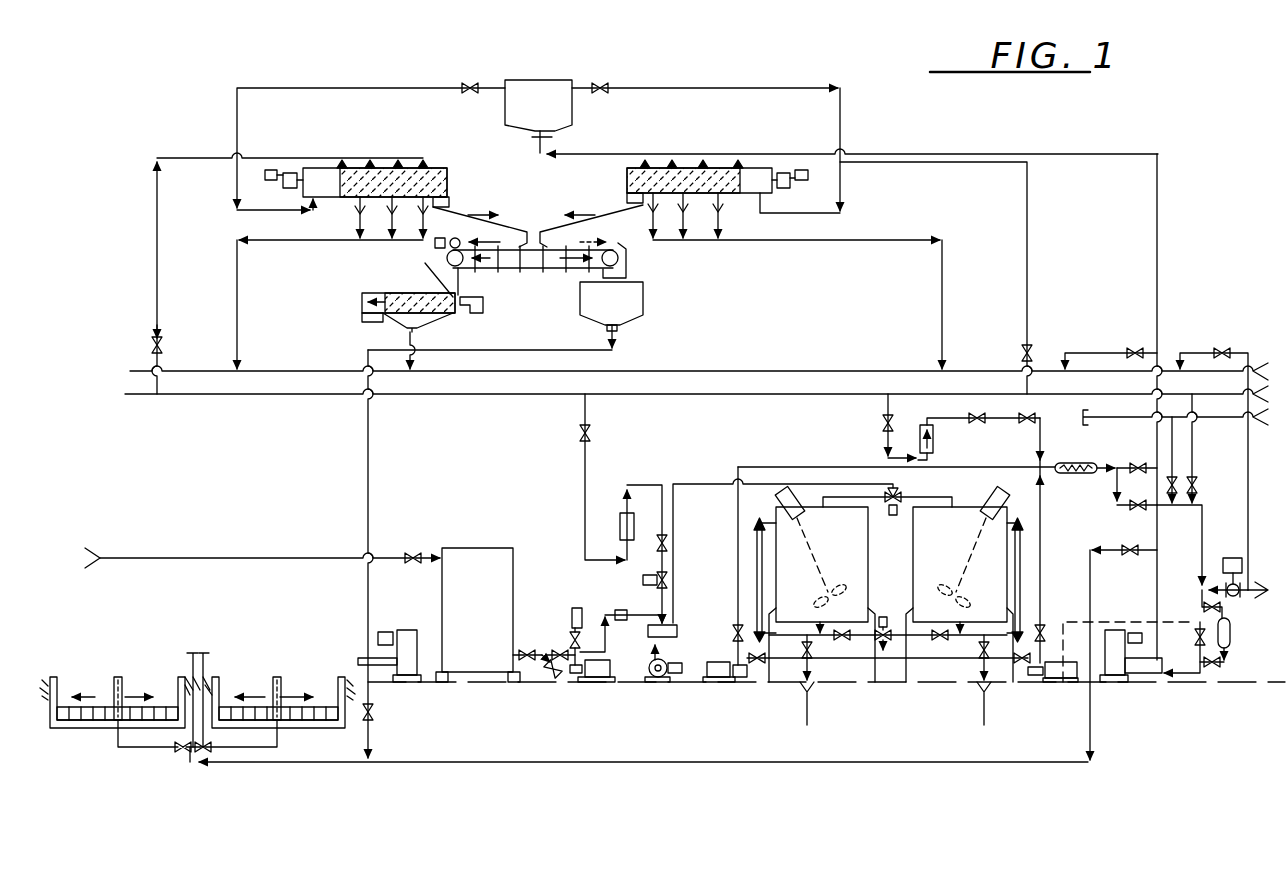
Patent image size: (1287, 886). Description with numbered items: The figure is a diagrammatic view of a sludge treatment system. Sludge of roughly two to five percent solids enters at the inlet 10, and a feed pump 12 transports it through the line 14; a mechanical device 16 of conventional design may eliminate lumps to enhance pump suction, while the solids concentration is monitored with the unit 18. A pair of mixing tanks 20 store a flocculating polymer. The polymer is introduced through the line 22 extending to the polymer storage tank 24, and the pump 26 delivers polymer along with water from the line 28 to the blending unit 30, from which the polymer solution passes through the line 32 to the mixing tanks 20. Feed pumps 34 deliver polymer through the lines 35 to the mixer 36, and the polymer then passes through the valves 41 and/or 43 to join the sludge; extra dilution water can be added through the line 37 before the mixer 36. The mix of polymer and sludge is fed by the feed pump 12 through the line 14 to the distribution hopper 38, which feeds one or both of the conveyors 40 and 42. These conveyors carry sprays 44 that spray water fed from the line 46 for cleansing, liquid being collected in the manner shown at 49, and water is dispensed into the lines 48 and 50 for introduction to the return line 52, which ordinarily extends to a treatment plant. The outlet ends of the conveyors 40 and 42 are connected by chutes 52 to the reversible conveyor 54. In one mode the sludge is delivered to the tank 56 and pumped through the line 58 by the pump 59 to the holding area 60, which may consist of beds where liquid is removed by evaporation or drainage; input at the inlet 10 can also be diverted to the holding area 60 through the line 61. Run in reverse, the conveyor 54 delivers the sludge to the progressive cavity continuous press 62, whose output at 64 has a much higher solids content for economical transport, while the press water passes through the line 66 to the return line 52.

The inlet 10 is at (1268, 588).
The feed pump 12 is at (1113, 667).
The line 14 is at (1158, 250).
The mechanical device 16 is at (1233, 558).
The unit 18 is at (1227, 635).
The mixing tanks 20 is at (783, 613).
The line 22 is at (277, 558).
The polymer storage tank 24 is at (487, 558).
The pump 26 is at (598, 676).
The line 28 is at (585, 462).
The blending unit 30 is at (686, 628).
The line 32 is at (697, 484).
The feed pumps 34 is at (718, 672).
The lines 35 is at (737, 548).
The mixer 36 is at (1058, 463).
The line 37 is at (887, 440).
The distribution hopper 38 is at (522, 93).
The conveyor 40 is at (318, 172).
The valve 41 is at (1132, 467).
The conveyor 42 is at (758, 172).
The valve 43 is at (1138, 507).
The sprays 44 is at (373, 165).
The line 46 is at (782, 395).
The line 48 is at (300, 242).
The liquid collection 49 is at (353, 220).
The line 50 is at (817, 241).
The return line / chutes 52 is at (448, 213).
The conveyor 54 is at (530, 273).
The tank 56 is at (635, 297).
The line 58 is at (368, 457).
The pump 59 is at (407, 673).
The holding area 60 is at (160, 682).
The line 61 is at (762, 762).
The progressive cavity continuous press 62 is at (362, 303).
The press output 64 is at (347, 340).
The line 66 is at (413, 337).